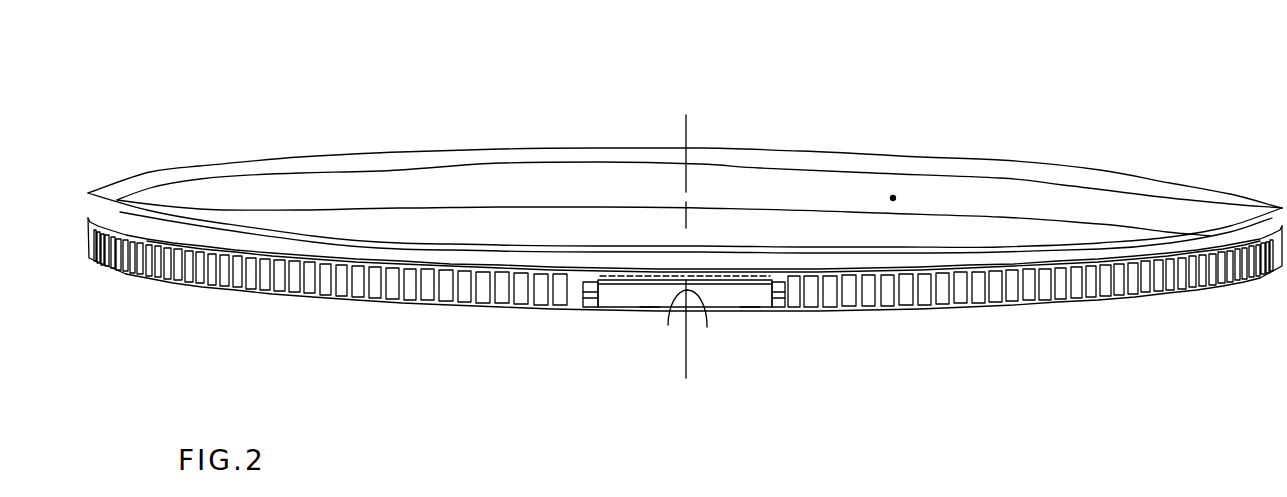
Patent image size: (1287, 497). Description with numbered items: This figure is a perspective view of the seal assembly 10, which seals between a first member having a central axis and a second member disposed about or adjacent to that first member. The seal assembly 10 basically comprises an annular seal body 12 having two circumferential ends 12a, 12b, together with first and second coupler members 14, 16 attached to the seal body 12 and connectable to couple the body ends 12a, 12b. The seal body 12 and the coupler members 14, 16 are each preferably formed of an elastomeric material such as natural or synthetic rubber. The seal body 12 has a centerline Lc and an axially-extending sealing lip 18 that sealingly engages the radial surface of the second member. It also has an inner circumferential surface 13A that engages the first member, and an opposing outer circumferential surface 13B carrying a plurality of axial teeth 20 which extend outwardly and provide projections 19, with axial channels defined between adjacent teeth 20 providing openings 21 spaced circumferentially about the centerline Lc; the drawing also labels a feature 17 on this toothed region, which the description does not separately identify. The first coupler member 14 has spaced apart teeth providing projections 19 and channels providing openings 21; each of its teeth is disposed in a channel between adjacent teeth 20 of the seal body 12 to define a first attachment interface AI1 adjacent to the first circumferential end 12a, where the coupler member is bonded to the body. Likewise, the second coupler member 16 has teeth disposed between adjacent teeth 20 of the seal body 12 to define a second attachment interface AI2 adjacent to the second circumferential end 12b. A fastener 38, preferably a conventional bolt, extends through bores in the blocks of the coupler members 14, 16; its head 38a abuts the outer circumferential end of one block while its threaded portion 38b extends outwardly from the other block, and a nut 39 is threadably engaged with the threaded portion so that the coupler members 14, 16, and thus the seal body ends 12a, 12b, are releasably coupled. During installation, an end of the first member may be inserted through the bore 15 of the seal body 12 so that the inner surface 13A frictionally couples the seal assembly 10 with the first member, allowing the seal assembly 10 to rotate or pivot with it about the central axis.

The seal assembly 10 is at (360, 68).
The annular seal body 12 is at (601, 160).
The first circumferential end 12a is at (711, 320).
The second circumferential end 12b is at (670, 320).
The inner circumferential surface 13A is at (483, 190).
The outer circumferential surface 13B is at (253, 287).
The first coupler member 14 is at (647, 315).
The bore 15 is at (893, 198).
The second coupler member 16 is at (751, 320).
The slot 17 is at (543, 305).
The axially-extending sealing lip 18 is at (1165, 184).
The projections 19 is at (342, 293).
The axial teeth 20 is at (297, 280).
The openings 21 is at (315, 295).
The fastener 38 is at (745, 290).
The head 38a is at (779, 310).
The threaded portion 38b is at (582, 294).
The nut 39 is at (592, 306).
The first attachment interface AI1 is at (636, 278).
The second attachment interface AI2 is at (717, 278).
The centerline Lc is at (686, 116).